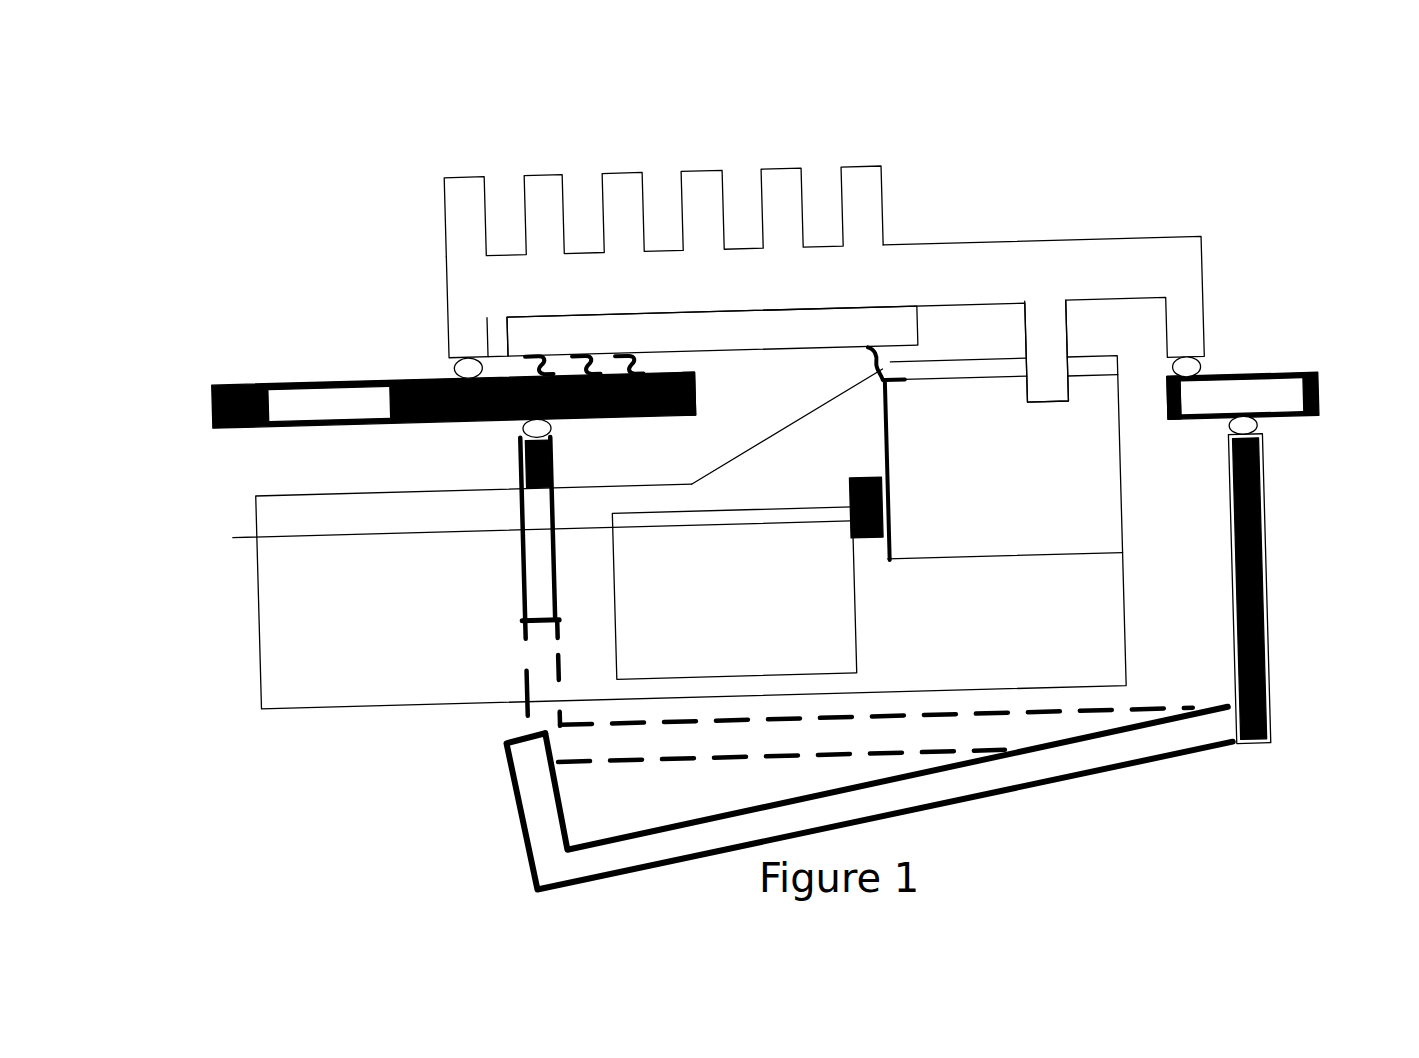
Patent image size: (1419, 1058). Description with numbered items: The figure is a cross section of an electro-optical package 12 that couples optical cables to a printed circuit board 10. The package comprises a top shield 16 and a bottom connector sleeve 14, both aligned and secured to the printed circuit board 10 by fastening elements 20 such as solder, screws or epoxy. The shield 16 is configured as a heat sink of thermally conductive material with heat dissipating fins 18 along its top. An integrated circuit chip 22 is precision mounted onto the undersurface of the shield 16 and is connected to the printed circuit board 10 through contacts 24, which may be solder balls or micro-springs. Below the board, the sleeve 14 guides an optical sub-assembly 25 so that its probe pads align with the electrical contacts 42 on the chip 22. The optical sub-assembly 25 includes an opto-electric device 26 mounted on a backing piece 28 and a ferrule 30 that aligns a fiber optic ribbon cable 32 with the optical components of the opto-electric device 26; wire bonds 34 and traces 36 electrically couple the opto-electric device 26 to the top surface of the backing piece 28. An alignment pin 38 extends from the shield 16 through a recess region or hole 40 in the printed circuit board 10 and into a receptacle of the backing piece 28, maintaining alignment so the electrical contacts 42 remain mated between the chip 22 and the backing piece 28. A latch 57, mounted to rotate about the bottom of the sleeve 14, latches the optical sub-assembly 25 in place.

The printed circuit board 10 is at (214, 392).
The electro-optical package 12 is at (311, 822).
The bottom connector sleeve 14 is at (1269, 565).
The top shield 16 is at (952, 249).
The heat dissipating fins 18 is at (555, 172).
The fastening elements 20 is at (449, 364).
The integrated circuit chip 22 is at (826, 345).
The contacts 24 is at (522, 363).
The optical sub-assembly 25 is at (395, 704).
The opto-electric device 26 is at (871, 545).
The backing piece 28 is at (1022, 494).
The ferrule 30 is at (716, 589).
The fiber optic ribbon cable 32 is at (394, 532).
The wire bonds 34 is at (852, 492).
The traces 36 is at (895, 423).
The alignment pin 38 is at (1047, 351).
The recess region or hole 40 is at (932, 395).
The electrical contacts 42 is at (899, 360).
The latch 57 is at (1002, 798).